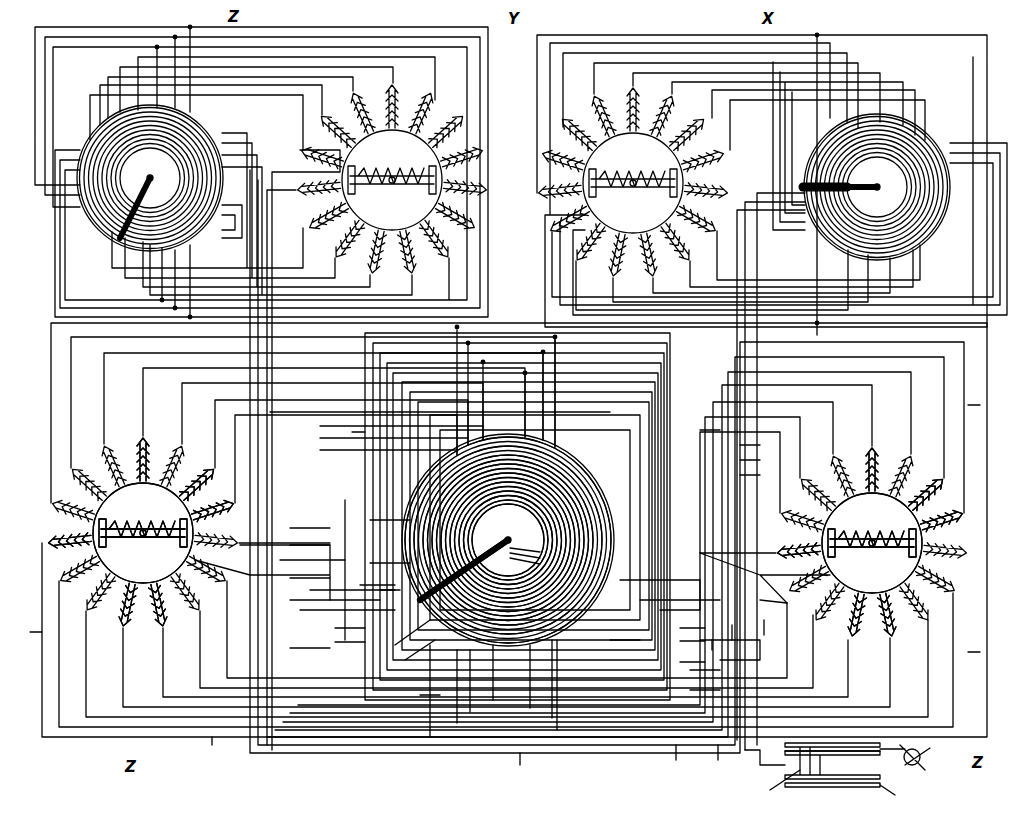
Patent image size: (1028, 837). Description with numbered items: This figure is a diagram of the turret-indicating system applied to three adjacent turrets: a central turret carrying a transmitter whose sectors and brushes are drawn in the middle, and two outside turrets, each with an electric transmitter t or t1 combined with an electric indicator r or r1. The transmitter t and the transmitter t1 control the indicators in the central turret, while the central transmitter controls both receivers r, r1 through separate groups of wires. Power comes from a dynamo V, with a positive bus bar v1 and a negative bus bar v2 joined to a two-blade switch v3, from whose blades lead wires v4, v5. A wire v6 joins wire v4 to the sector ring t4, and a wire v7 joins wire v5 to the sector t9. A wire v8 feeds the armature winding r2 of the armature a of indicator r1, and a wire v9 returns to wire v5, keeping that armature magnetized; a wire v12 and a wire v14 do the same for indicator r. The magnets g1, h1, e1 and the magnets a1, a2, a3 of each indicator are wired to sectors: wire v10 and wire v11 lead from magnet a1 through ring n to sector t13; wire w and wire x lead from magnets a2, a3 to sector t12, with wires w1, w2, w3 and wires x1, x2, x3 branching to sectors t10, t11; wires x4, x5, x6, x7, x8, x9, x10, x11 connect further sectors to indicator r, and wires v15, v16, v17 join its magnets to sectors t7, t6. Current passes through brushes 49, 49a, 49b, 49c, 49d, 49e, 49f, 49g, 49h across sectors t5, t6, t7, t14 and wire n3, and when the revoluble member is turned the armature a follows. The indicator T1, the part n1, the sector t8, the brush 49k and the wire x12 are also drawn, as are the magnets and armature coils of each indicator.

The electric transmitter t is at (876, 185).
The electric transmitter t1 is at (145, 178).
The ring n is at (507, 361).
The rotary switch armature n1 is at (633, 182).
The wire n3 is at (375, 610).
The central spiral coil T1 is at (511, 540).
The magnet g1 is at (517, 461).
The armature a is at (469, 533).
The magnet a1 is at (434, 537).
The magnet a2 is at (565, 489).
The magnet a3 is at (578, 525).
The magnet h1 is at (481, 610).
The magnet e1 is at (520, 610).
The electric indicator r is at (872, 543).
The electric indicator r1 is at (143, 511).
The armature winding r2 is at (507, 562).
The sector ring t4 is at (440, 495).
The sector t5 is at (470, 490).
The sector t6 is at (485, 500).
The sector t7 is at (508, 540).
The coil turn t8 is at (508, 540).
The sector t9 is at (508, 540).
The sector t10 is at (600, 500).
The sector t11 is at (605, 515).
The sector t12 is at (605, 530).
The sector t13 is at (600, 550).
The sector t14 is at (600, 565).
The brush 49 is at (405, 548).
The brush 49a is at (480, 571).
The brush 49b is at (490, 561).
The brush 49c is at (508, 556).
The brush 49d is at (525, 562).
The brush 49e is at (525, 557).
The brush 49f is at (525, 551).
The brush 49g is at (396, 642).
The brush 49h is at (380, 560).
The contact segment 49k is at (417, 652).
The wire w is at (441, 405).
The wire w1 is at (374, 449).
The wire w2 is at (380, 436).
The wire w3 is at (387, 423).
The wire x is at (456, 638).
The wire x1 is at (354, 565).
The wire x2 is at (339, 623).
The wire x3 is at (339, 639).
The wire x4 is at (678, 625).
The wire x5 is at (678, 638).
The wire x6 is at (678, 660).
The wire x7 is at (705, 667).
The wire x8 is at (705, 689).
The wire x9 is at (701, 417).
The wire x10 is at (758, 441).
The wire x11 is at (758, 457).
The conductor x12 is at (758, 472).
The positive bus bar v1 is at (832, 762).
The negative bus bar v2 is at (892, 793).
The two-blade switch v3 is at (778, 784).
The wire v4 is at (498, 684).
The wire v5 is at (476, 673).
The wire v6 is at (304, 543).
The wire v7 is at (302, 521).
The wire v8 is at (368, 580).
The wire v9 is at (380, 519).
The wire v10 is at (274, 702).
The wire v11 is at (420, 692).
The wire v12 is at (768, 592).
The wire v14 is at (732, 624).
The wire v15 is at (739, 627).
The wire v16 is at (669, 417).
The wire v17 is at (985, 651).
The dynamo V is at (843, 761).